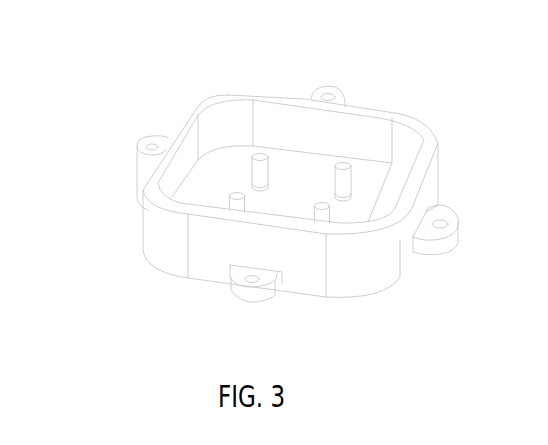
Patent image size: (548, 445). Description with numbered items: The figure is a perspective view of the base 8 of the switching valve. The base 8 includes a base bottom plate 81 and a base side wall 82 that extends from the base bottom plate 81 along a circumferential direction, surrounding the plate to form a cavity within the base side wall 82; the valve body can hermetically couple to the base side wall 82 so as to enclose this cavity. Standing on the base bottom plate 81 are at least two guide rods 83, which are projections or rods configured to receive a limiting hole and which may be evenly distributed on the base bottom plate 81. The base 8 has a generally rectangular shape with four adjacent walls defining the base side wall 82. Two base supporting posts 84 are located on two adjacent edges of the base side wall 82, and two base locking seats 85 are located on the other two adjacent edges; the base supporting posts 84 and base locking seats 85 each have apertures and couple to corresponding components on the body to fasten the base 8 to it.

The base 8 is at (145, 73).
The base bottom plate 81 is at (193, 203).
The base side wall 82 is at (210, 95).
The guide rods 83 is at (348, 165).
The base supporting posts 84 is at (137, 147).
The base locking seats 85 is at (252, 293).